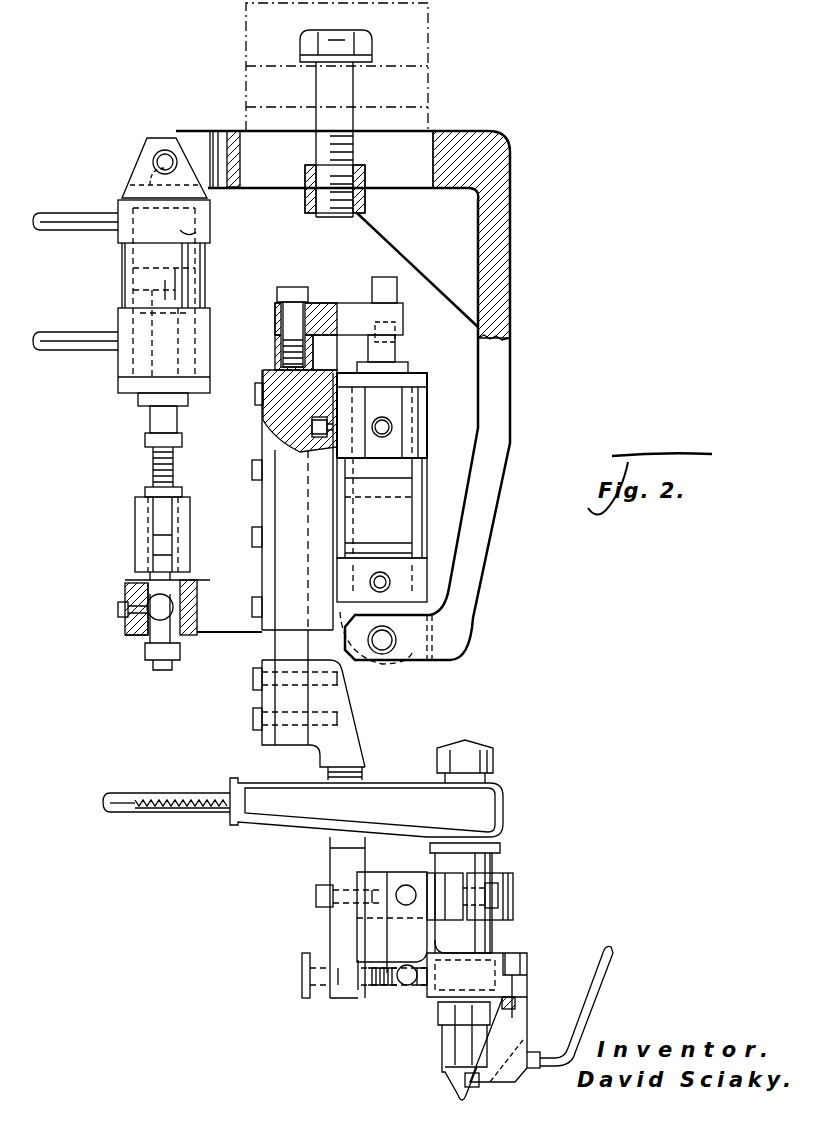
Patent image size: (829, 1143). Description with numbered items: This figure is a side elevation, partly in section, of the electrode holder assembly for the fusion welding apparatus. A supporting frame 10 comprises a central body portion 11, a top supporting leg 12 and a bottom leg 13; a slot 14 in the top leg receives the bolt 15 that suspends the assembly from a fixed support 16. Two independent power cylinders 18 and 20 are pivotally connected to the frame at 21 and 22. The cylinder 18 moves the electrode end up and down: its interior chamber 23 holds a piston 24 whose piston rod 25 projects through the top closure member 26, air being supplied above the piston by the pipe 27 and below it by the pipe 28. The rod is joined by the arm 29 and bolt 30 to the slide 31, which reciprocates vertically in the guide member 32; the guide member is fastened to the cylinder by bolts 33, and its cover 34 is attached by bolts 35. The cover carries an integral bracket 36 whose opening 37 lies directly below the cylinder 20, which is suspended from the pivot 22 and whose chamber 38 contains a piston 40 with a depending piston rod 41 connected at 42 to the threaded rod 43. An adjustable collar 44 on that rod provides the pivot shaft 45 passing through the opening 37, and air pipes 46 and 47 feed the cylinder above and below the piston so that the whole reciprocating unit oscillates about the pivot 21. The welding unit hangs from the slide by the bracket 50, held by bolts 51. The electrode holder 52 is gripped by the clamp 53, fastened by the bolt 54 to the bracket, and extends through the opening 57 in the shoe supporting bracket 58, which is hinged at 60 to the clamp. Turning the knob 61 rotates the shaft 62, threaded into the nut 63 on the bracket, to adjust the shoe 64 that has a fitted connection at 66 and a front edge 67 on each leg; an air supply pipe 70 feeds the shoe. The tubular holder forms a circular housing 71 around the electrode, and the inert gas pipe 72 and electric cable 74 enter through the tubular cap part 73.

The supporting frame 10 is at (510, 292).
The central body portion 11 is at (505, 380).
The top supporting leg 12 is at (468, 142).
The bottom leg 13 is at (465, 652).
The slot 14 is at (397, 152).
The bolt 15 is at (327, 93).
The fixed support 16 is at (246, 20).
The power cylinder 18 is at (430, 510).
The power cylinder 20 is at (121, 275).
The pivot connection 21 is at (382, 655).
The pivot connection 22 is at (160, 160).
The interior chamber 23 is at (410, 540).
The piston 24 is at (427, 480).
The piston rod 25 is at (395, 350).
The top closure member 26 is at (420, 373).
The pipe 27 is at (395, 428).
The pipe 28 is at (392, 582).
The arm 29 is at (352, 300).
The bolt 30 is at (289, 290).
The slide 31 is at (300, 405).
The guide member 32 is at (283, 487).
The bolts 33 is at (320, 395).
The cover 34 is at (262, 452).
The bolts 35 is at (255, 388).
The bracket 36 is at (262, 548).
The opening 37 is at (150, 580).
The chamber 38 is at (192, 230).
The piston 40 is at (185, 282).
The piston rod 41 is at (157, 345).
The connection 42 is at (152, 426).
The threaded rod 43 is at (155, 455).
The adjustable collar 44 is at (135, 528).
The pivot shaft 45 is at (130, 641).
The air supply pipe 46 is at (63, 212).
The air supply pipe 47 is at (67, 333).
The bracket 50 is at (345, 748).
The bolts 51 is at (252, 720).
The electrode holder 52 is at (480, 935).
The clamp 53 is at (513, 885).
The bolt 54 is at (316, 895).
The opening 57 is at (425, 995).
The shoe supporting bracket 58 is at (527, 977).
The hinge 60 is at (405, 885).
The knob 61 is at (302, 978).
The shaft 62 is at (345, 990).
The nut 63 is at (393, 988).
The shoe 64 is at (520, 1033).
The fitted connection 66 is at (516, 1002).
The front edge 67 is at (465, 1080).
The air supply pipe 70 is at (610, 992).
The circular housing 71 is at (440, 1048).
The pipe 72 is at (105, 812).
The tubular cap part 73 is at (485, 800).
The electric cable 74 is at (188, 812).